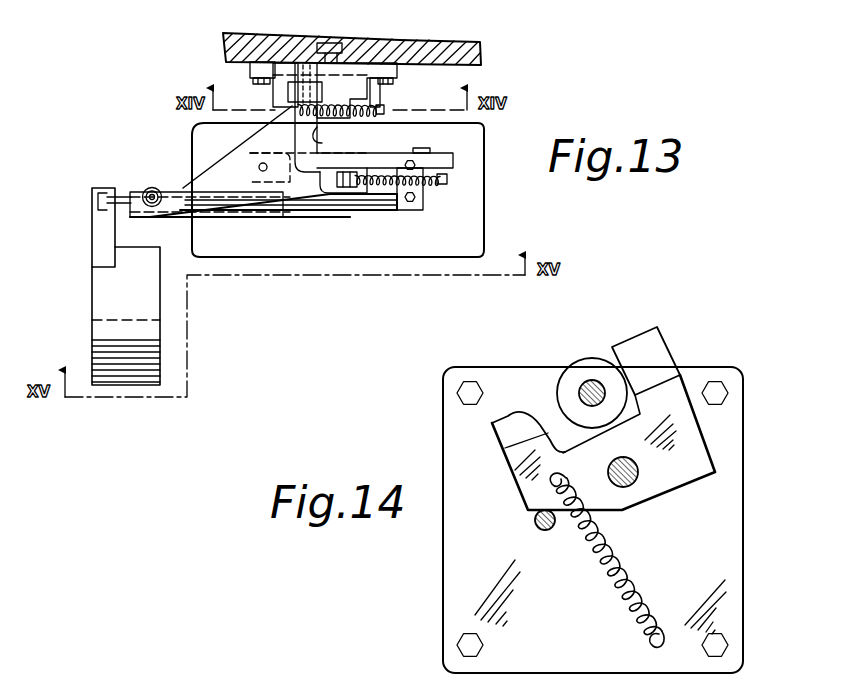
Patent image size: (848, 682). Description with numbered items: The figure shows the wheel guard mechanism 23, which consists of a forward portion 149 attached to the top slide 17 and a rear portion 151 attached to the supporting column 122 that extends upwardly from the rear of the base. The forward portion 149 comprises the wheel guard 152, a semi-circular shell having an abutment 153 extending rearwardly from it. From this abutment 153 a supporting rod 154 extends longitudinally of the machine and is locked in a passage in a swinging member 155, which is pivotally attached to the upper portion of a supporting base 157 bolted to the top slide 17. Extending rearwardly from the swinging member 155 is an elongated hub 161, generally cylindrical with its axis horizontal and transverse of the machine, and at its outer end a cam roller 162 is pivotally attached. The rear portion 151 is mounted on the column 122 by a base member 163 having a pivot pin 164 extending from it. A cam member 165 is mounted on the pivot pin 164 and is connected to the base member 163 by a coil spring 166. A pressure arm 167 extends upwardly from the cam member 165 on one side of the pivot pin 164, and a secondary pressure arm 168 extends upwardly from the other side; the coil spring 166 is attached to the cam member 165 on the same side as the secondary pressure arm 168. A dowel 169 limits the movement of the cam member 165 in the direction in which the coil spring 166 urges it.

In FIG. 13, the supporting column 122 is at (437, 43).
In FIG. 13, the cam roller 162 is at (290, 93).
In FIG. 14, the cam roller 162 is at (592, 358).
In FIG. 13, the elongated hub 161 is at (320, 132).
In FIG. 14, the elongated hub 161 is at (578, 386).
In FIG. 13, the swinging member 155 is at (256, 158).
In FIG. 13, the wheel guard mechanism 23 is at (455, 160).
In FIG. 14, the wheel guard mechanism 23 is at (735, 436).
In FIG. 13, the top slide 17 is at (470, 233).
In FIG. 13, the supporting base 157 is at (410, 212).
In FIG. 13, the forward portion 149 is at (263, 213).
In FIG. 13, the supporting rod 154 is at (120, 193).
In FIG. 13, the abutment 153 is at (98, 238).
In FIG. 13, the wheel guard 152 is at (102, 317).
In FIG. 14, the pressure arm 167 is at (648, 347).
In FIG. 14, the cam member 165 is at (680, 386).
In FIG. 14, the secondary pressure arm 168 is at (510, 421).
In FIG. 14, the pivot pin 164 is at (640, 466).
In FIG. 14, the base member 163 is at (725, 500).
In FIG. 14, the dowel 169 is at (533, 523).
In FIG. 14, the rear portion 151 is at (458, 566).
In FIG. 14, the coil spring 166 is at (634, 571).